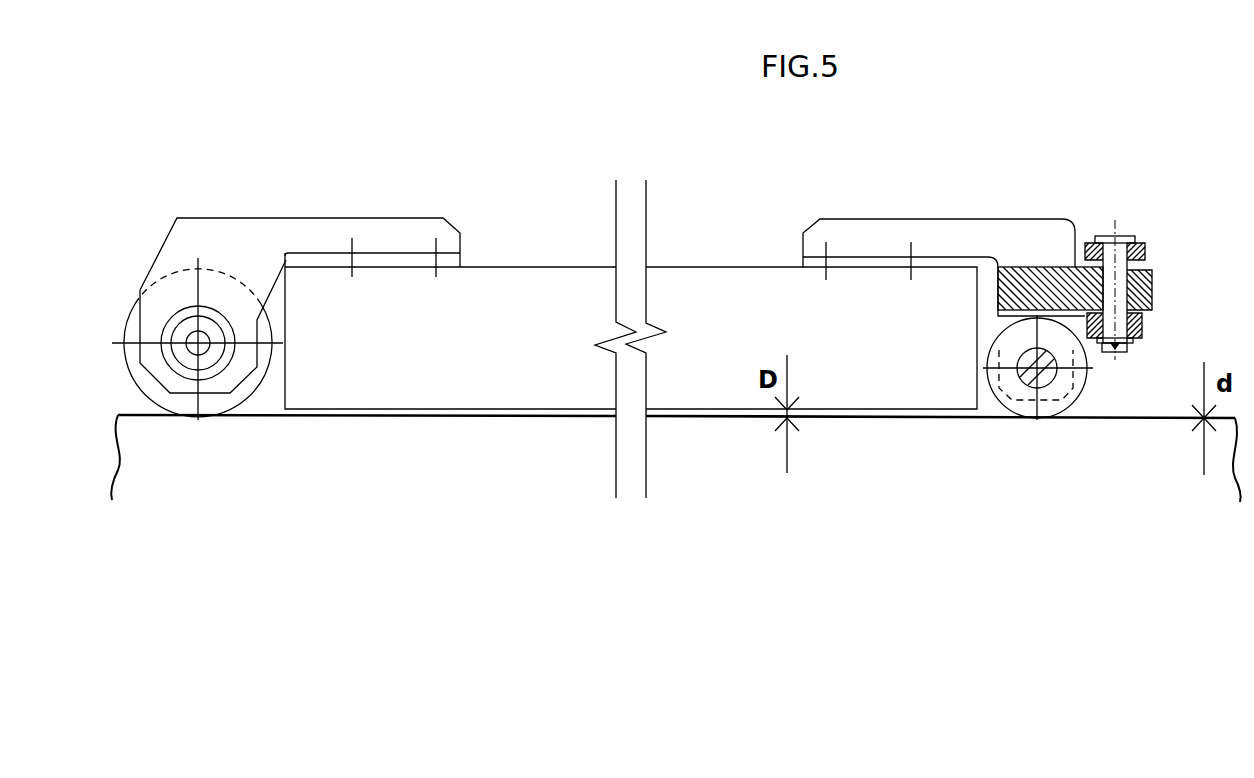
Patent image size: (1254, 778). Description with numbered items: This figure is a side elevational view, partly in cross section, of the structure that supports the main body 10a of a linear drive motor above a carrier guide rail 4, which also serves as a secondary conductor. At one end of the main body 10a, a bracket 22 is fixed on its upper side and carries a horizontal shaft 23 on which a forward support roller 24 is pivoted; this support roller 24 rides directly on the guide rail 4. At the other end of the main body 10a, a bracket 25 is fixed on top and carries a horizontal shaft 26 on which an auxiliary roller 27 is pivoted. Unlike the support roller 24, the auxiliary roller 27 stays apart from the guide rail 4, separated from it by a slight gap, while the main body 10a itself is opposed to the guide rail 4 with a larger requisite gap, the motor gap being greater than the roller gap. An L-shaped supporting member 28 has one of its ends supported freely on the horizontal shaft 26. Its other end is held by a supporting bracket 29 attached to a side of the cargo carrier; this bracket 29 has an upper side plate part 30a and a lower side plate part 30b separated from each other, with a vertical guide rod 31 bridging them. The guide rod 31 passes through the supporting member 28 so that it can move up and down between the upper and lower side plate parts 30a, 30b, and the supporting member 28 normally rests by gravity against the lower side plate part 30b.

The guide rail 4 is at (418, 440).
The main linear motor body 10a is at (688, 378).
The bracket 22 is at (344, 232).
The horizontal shaft 23 is at (203, 347).
The forward support roller 24 is at (201, 400).
The bracket 25 is at (943, 233).
The horizontal shaft 26 is at (1033, 385).
The auxiliary roller 27 is at (1060, 392).
The L-shaped supporting member 28 is at (1035, 277).
The supporting bracket 29 is at (1146, 243).
The upper side plate part 30a is at (1145, 250).
The lower side plate part 30b is at (1135, 325).
The vertical guide rod 31 is at (1117, 288).